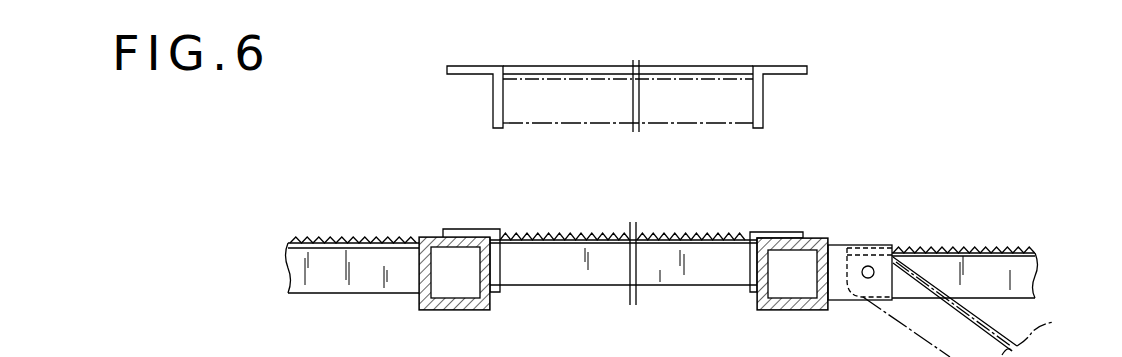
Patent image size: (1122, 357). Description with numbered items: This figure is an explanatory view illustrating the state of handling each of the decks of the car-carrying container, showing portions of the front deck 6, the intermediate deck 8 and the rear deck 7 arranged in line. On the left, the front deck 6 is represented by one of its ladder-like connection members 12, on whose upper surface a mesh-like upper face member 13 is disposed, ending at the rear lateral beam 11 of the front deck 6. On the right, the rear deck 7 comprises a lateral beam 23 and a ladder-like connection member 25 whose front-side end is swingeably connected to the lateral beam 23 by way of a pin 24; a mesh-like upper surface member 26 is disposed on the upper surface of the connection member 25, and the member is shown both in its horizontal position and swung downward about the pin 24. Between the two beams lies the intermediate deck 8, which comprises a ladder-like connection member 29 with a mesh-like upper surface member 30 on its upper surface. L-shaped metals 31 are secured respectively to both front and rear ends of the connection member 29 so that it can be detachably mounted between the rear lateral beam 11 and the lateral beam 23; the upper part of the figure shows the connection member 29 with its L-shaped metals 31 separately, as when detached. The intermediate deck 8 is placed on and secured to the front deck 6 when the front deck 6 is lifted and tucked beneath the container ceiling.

The front deck 6 is at (353, 244).
The rear deck 7 is at (960, 255).
The intermediate deck 8 is at (636, 167).
The rear lateral beam 11 is at (472, 311).
The connection member 12 is at (363, 294).
The upper face member 13 is at (340, 240).
The lateral beam 23 is at (800, 311).
The pin 24 is at (868, 265).
The connection member 25 is at (1020, 299).
The upper surface member 26 is at (1003, 247).
The connection member 29 is at (557, 124).
The upper surface member 30 is at (575, 232).
The L-shaped metal 31 is at (488, 66).